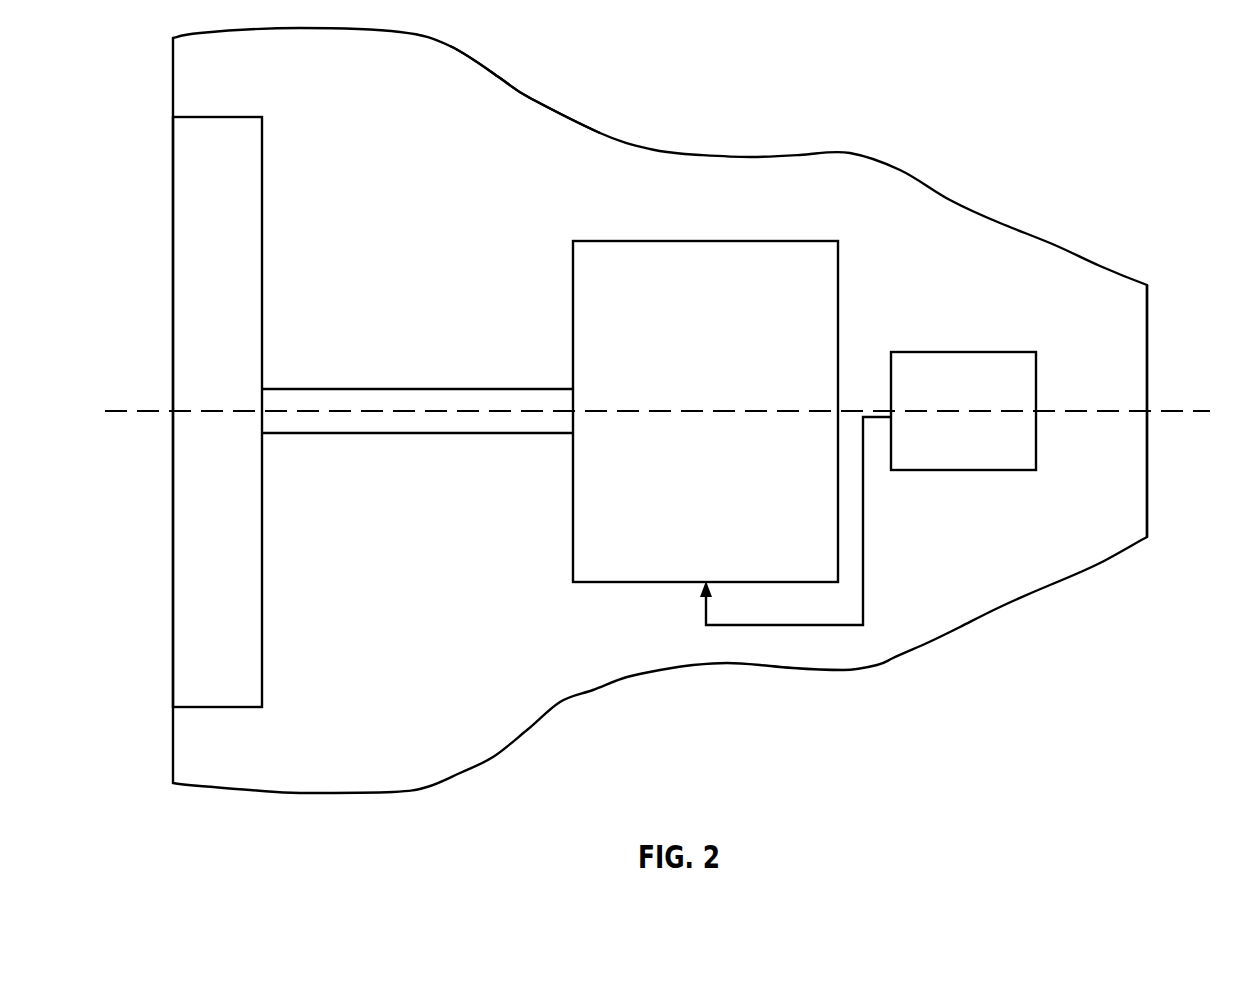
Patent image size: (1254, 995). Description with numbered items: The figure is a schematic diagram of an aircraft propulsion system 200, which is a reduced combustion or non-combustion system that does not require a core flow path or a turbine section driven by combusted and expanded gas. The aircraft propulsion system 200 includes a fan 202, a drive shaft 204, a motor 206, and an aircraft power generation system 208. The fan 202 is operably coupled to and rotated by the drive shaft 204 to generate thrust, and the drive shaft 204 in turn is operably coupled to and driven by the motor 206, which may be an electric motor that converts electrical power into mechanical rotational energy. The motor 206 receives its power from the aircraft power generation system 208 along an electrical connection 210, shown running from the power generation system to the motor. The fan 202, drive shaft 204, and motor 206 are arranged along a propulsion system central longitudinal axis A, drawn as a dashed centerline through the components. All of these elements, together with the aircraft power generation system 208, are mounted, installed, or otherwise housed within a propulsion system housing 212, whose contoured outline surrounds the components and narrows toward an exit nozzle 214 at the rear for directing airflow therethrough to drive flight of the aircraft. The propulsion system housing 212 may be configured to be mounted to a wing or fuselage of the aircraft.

The aircraft propulsion system 200 is at (955, 144).
The fan 202 is at (222, 115).
The drive shaft 204 is at (426, 388).
The motor 206 is at (786, 240).
The aircraft power generation system 208 is at (988, 351).
The electrical connection 210 is at (867, 578).
The propulsion system housing 212 is at (528, 95).
The exit nozzle 214 is at (1148, 480).
The propulsion system central longitudinal axis A is at (1168, 411).